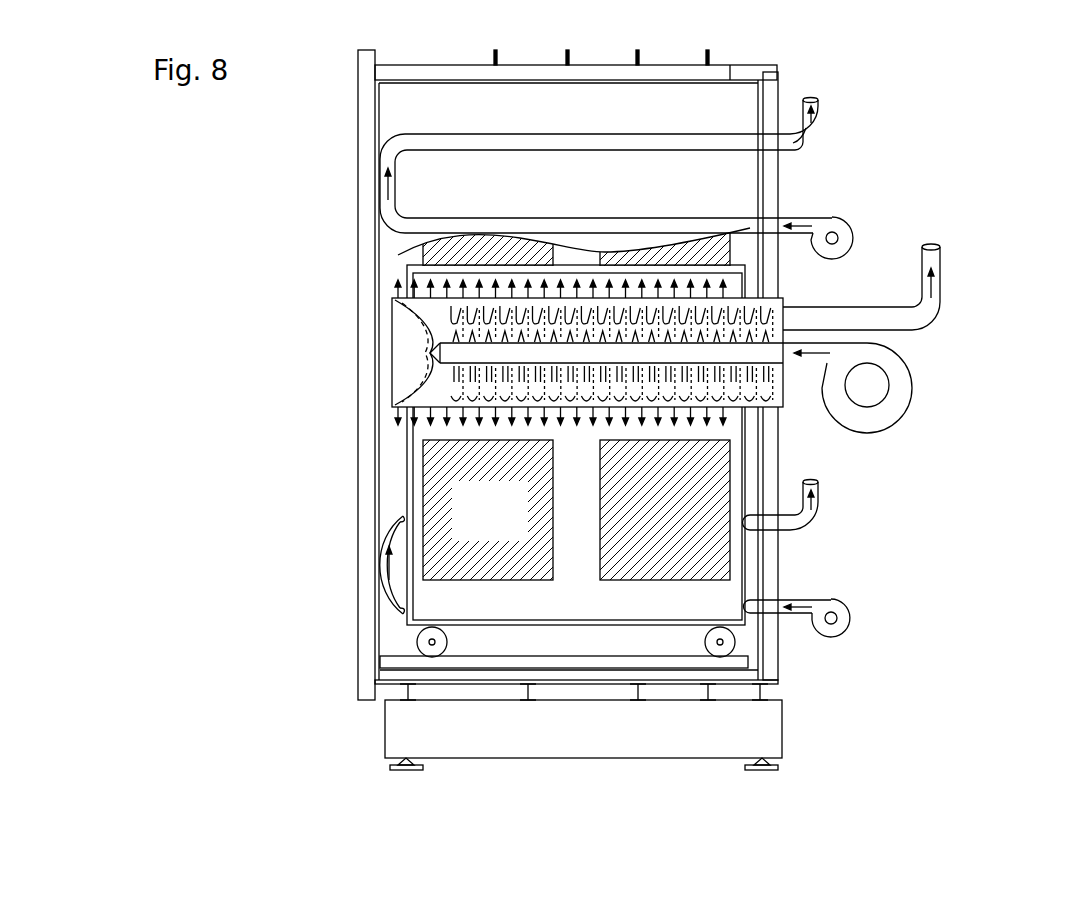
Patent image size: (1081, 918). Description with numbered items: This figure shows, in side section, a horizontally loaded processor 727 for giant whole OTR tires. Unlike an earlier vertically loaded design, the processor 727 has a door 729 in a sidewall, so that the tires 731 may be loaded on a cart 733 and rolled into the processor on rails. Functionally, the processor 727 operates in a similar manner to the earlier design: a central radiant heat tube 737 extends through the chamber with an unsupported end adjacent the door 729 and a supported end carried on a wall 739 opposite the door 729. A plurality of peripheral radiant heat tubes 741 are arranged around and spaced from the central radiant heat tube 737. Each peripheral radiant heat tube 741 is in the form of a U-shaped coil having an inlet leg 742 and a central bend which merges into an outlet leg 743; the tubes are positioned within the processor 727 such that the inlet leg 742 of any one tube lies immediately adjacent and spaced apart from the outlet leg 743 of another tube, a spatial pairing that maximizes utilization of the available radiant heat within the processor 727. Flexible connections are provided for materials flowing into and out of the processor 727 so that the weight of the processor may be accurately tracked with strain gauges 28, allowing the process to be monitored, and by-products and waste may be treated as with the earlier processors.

The horizontally loaded processor 727 is at (643, 411).
The door 729 is at (363, 528).
The tires 731 is at (423, 462).
The cart 733 is at (620, 622).
The central radiant heat tube 737 is at (455, 298).
The wall 739 is at (770, 548).
The peripheral radiant heat tubes 741 is at (604, 323).
The inlet leg 742 is at (636, 228).
The outlet leg 743 is at (643, 142).
The strain gauges 28 is at (395, 767).